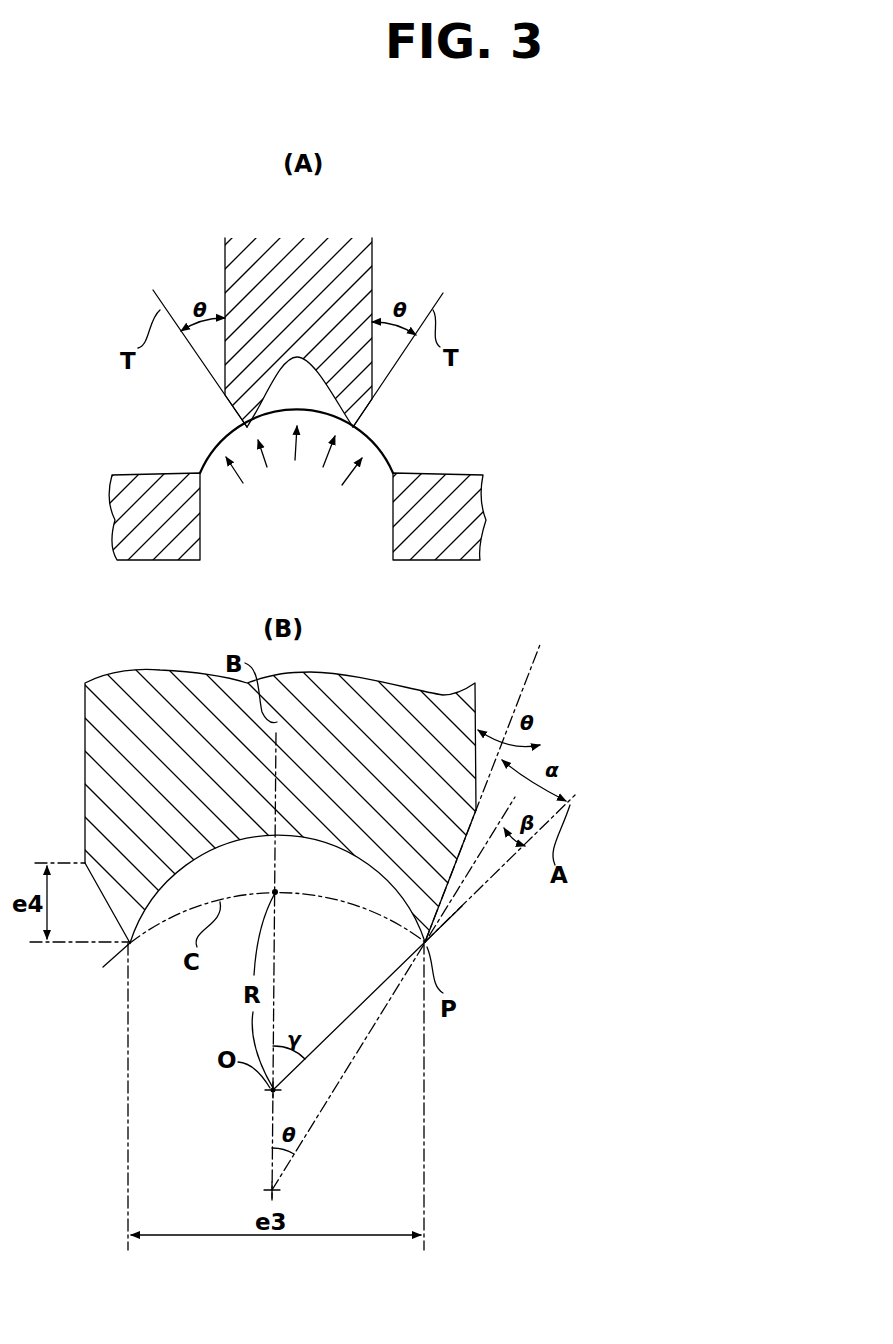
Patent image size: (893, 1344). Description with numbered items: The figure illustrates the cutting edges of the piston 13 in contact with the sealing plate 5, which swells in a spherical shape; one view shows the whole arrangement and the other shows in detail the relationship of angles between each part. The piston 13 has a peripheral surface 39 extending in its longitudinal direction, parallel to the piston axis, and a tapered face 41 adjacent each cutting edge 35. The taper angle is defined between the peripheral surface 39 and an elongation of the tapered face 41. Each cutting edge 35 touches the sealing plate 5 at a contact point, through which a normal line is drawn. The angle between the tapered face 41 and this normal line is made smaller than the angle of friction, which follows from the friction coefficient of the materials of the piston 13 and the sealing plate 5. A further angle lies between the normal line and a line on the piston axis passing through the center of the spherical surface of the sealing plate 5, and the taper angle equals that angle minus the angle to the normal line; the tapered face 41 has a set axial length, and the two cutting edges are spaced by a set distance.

The peripheral surface 39 is at (225, 272).
The cutting edge 35 is at (333, 400).
The tapered face 41 is at (243, 416).
The sealing plate 5 is at (377, 438).
The piston 13 is at (416, 682).